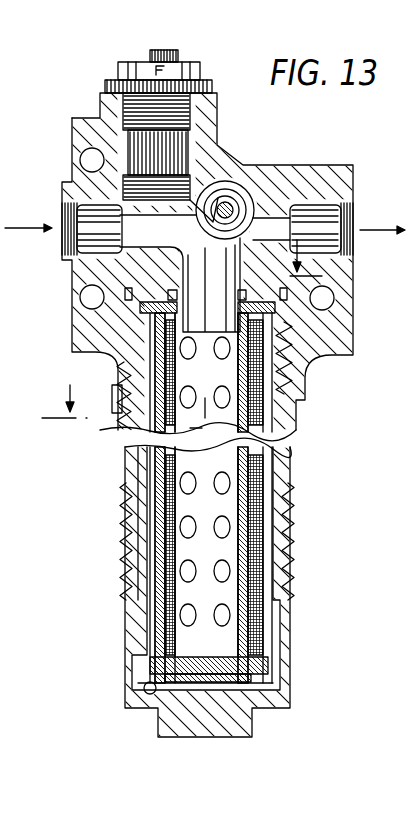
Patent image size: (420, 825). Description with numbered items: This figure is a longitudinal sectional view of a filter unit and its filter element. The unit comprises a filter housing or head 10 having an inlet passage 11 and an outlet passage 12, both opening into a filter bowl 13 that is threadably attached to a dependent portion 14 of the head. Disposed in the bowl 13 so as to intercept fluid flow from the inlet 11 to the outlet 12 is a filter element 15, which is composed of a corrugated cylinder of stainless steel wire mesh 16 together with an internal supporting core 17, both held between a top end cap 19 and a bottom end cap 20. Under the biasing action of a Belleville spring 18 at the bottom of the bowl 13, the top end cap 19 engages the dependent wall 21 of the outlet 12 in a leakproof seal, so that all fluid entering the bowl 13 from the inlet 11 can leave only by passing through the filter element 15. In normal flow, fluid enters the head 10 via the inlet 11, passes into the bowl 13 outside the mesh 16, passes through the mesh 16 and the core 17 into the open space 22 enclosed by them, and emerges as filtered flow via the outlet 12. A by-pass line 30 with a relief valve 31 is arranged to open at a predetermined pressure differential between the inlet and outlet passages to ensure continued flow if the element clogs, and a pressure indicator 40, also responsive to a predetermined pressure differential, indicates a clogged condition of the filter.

The filter housing or head 10 is at (332, 166).
The inlet passage 11 is at (120, 236).
The outlet passage 12 is at (308, 222).
The filter bowl 13 is at (286, 530).
The dependent portion 14 is at (96, 370).
The filter element 15 is at (140, 528).
The stainless steel wire mesh 16 is at (260, 473).
The internal supporting core 17 is at (162, 603).
The Belleville spring 18 is at (142, 692).
The top end cap 19 is at (278, 314).
The bottom end cap 20 is at (262, 670).
The dependent wall 21 is at (222, 338).
The open space 22 is at (222, 469).
The by-pass line 30 is at (235, 192).
The relief valve 31 is at (230, 208).
The pressure indicator 40 is at (168, 72).